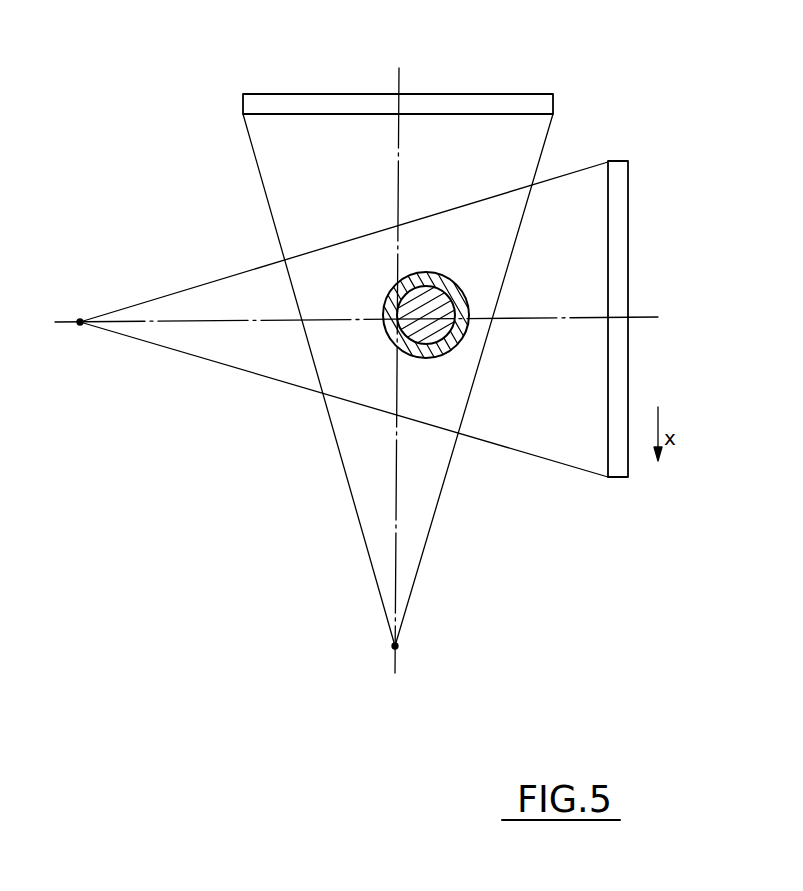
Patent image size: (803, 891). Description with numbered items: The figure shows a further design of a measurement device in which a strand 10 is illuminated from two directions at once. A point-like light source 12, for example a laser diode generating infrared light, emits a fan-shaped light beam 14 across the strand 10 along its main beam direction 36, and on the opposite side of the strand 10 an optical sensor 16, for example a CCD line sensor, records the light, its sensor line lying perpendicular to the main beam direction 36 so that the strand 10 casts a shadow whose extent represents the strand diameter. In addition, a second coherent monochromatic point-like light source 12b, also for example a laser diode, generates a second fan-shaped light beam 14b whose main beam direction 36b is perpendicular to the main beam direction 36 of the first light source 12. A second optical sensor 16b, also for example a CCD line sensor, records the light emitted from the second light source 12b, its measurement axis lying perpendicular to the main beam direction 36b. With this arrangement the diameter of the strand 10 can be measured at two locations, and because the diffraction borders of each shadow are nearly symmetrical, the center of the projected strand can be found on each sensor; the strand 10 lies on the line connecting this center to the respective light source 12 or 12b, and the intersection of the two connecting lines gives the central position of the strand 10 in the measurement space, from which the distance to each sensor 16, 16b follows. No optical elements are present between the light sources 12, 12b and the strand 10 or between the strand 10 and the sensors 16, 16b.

The strand 10 is at (398, 337).
The light source 12 is at (80, 325).
The second light source 12b is at (395, 646).
The fan-shaped light beam 14 is at (223, 278).
The fan-shaped light beam 14b is at (262, 181).
The optical sensor 16 is at (620, 247).
The second optical sensor 16b is at (526, 105).
The main beam direction 36 is at (230, 322).
The main beam direction 36b is at (401, 175).